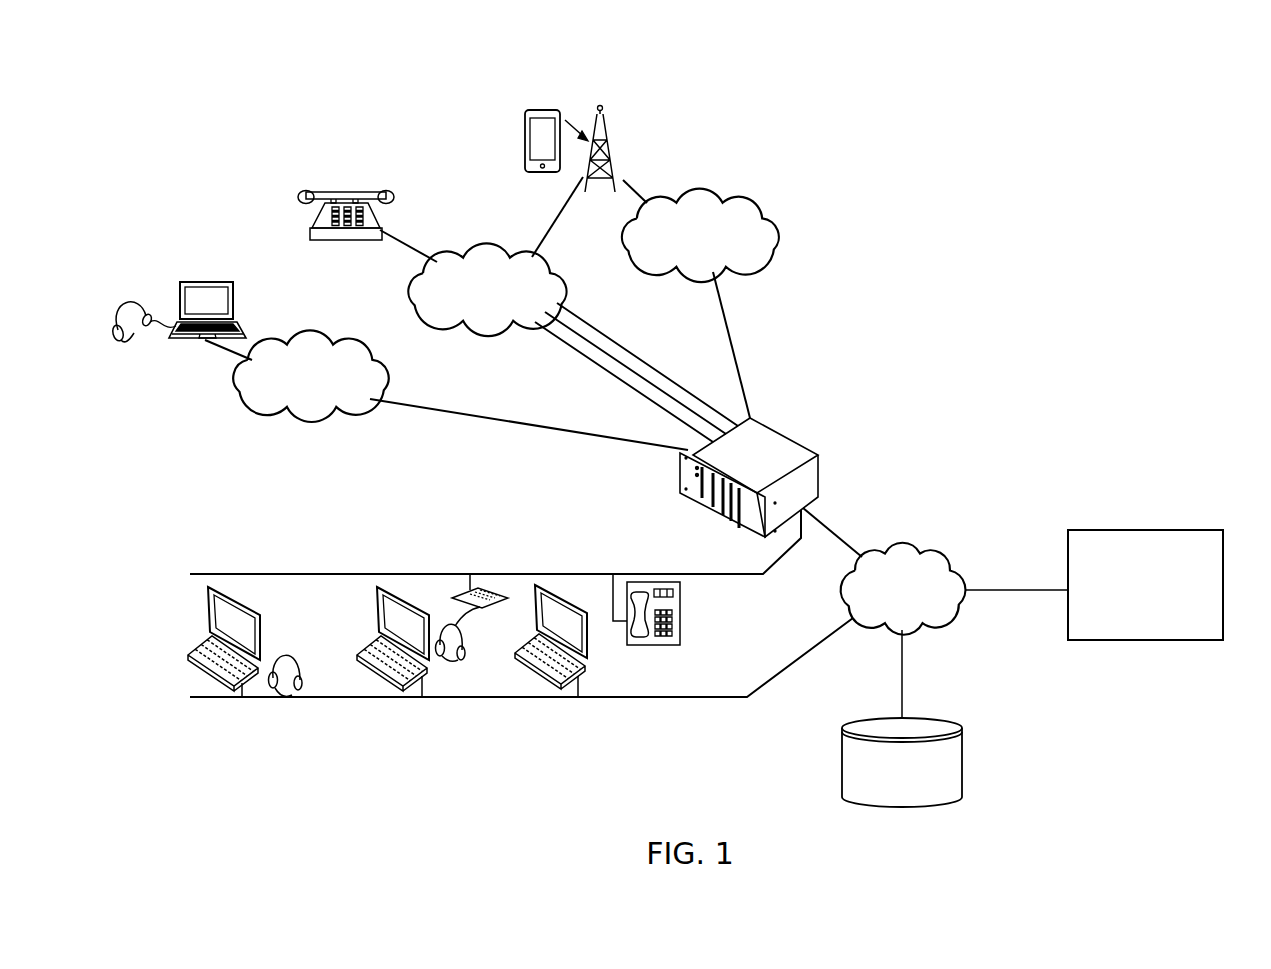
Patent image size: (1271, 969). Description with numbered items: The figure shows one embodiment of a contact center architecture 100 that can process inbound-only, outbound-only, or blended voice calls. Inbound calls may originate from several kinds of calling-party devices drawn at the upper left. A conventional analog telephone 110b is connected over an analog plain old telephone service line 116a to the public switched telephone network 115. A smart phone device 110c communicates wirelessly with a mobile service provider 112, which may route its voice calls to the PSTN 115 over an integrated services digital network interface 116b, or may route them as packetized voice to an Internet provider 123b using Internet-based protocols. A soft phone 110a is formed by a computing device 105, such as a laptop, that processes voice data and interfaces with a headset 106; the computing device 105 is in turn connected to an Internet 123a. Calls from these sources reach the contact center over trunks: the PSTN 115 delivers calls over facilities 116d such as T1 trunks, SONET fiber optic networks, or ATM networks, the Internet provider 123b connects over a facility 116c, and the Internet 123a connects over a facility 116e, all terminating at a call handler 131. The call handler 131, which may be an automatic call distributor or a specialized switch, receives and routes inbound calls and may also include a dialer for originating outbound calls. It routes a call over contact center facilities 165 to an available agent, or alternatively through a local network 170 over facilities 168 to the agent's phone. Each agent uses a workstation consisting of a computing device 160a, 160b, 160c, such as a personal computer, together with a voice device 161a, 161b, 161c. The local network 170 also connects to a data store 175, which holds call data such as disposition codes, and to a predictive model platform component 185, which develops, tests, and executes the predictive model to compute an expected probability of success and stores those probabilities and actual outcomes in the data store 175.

The contact center architecture 100 is at (903, 229).
The computing device 105 is at (180, 306).
The headset 106 is at (127, 343).
The soft phone 110a is at (209, 267).
The conventional analog telephone 110b is at (382, 223).
The smart phone device 110c is at (524, 145).
The mobile service provider 112 is at (611, 160).
The public switched telephone network 115 is at (472, 306).
The analog plain old telephone service line 116a is at (410, 255).
The integrated services digital network interface 116b is at (567, 200).
The facility 116c is at (736, 348).
The facilities 116d is at (598, 377).
The facility 116e is at (472, 412).
The Internet 123a is at (293, 395).
The Internet provider 123b is at (683, 252).
The call handler 131 is at (744, 483).
The computing device 160a is at (263, 630).
The computing device 160b is at (432, 625).
The computing device 160c is at (590, 632).
The voice device 161a is at (298, 672).
The voice device 161b is at (462, 650).
The voice device 161c is at (663, 645).
The contact center facilities 165 is at (712, 574).
The facilities 168 is at (718, 697).
The local network 170 is at (850, 608).
The data store 175 is at (889, 791).
The predictive model platform component 185 is at (1133, 631).